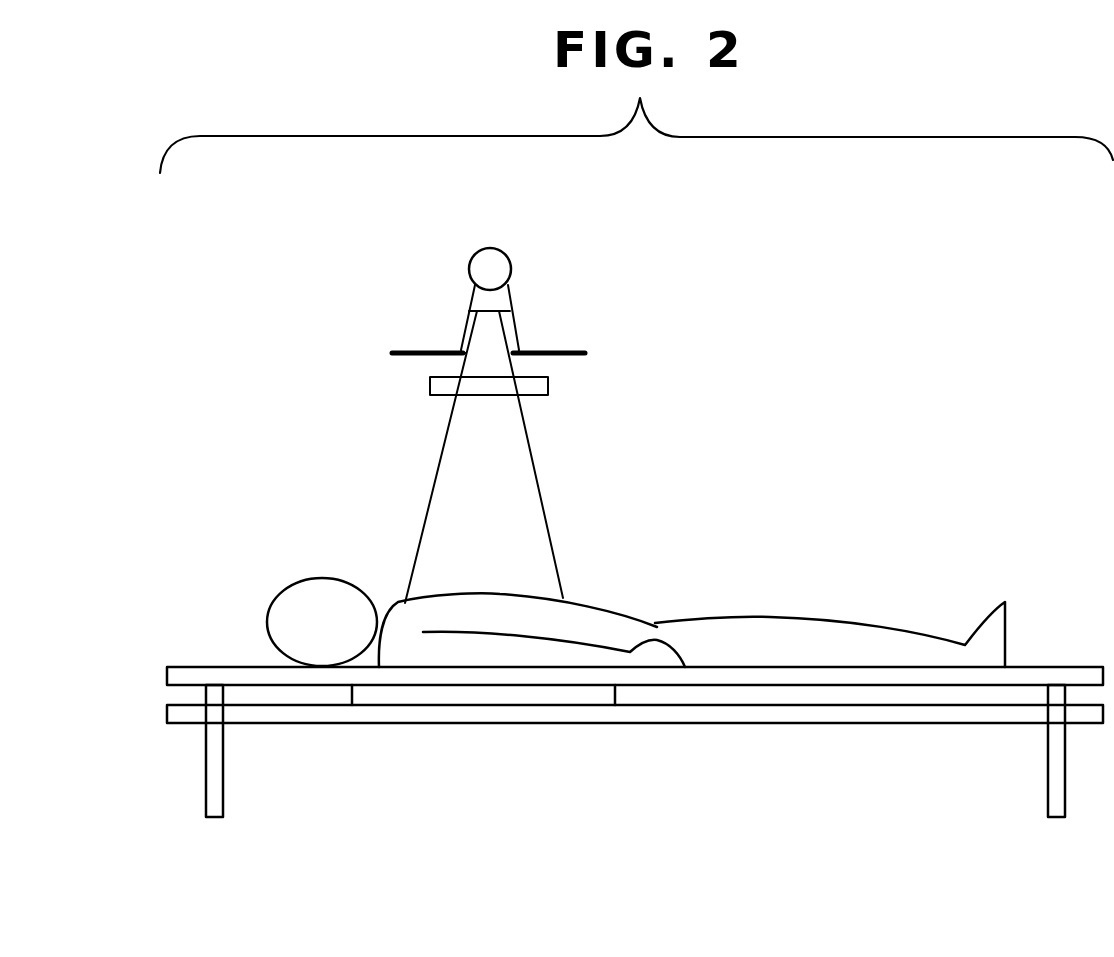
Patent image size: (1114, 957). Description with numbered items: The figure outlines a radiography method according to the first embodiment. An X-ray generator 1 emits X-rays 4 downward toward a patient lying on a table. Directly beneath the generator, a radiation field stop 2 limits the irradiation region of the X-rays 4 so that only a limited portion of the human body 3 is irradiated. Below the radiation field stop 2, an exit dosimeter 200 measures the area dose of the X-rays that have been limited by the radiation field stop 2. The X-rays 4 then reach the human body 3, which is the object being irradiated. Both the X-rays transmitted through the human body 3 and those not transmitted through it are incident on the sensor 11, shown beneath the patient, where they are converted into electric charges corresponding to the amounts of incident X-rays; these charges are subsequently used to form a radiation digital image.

The X-ray generator 1 is at (490, 248).
The radiation field stop 2 is at (563, 352).
The exit dosimeter 200 is at (548, 387).
The X-rays 4 is at (438, 485).
The human body 3 is at (873, 626).
The sensor 11 is at (483, 697).